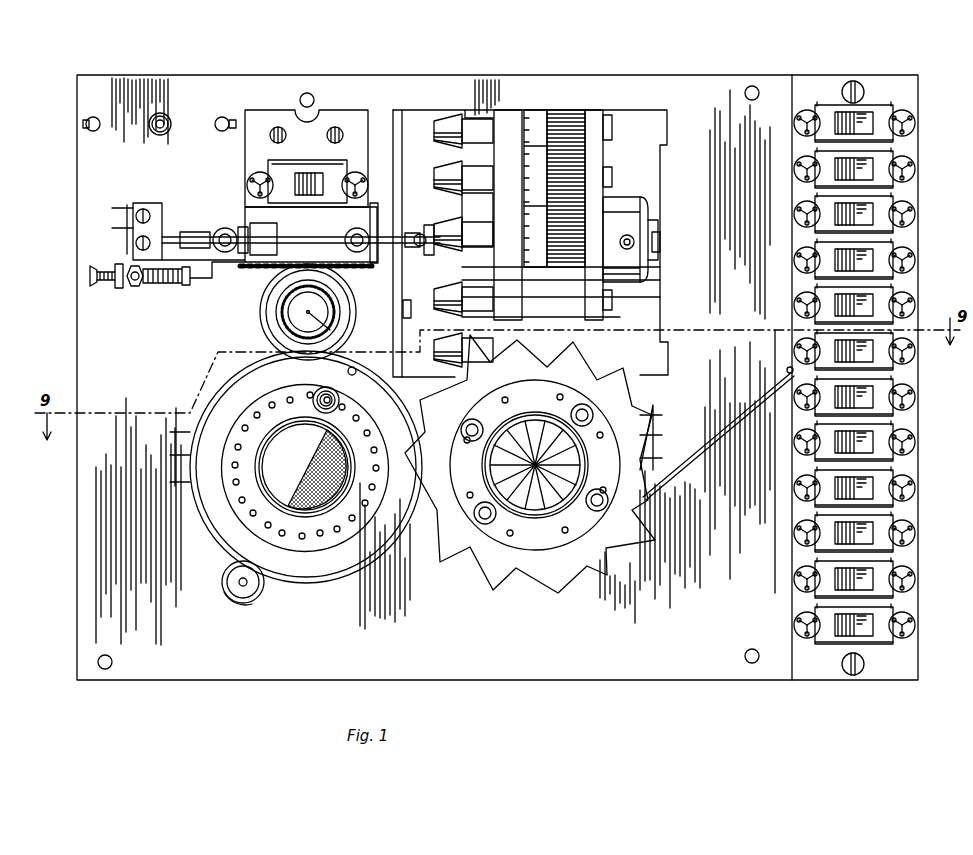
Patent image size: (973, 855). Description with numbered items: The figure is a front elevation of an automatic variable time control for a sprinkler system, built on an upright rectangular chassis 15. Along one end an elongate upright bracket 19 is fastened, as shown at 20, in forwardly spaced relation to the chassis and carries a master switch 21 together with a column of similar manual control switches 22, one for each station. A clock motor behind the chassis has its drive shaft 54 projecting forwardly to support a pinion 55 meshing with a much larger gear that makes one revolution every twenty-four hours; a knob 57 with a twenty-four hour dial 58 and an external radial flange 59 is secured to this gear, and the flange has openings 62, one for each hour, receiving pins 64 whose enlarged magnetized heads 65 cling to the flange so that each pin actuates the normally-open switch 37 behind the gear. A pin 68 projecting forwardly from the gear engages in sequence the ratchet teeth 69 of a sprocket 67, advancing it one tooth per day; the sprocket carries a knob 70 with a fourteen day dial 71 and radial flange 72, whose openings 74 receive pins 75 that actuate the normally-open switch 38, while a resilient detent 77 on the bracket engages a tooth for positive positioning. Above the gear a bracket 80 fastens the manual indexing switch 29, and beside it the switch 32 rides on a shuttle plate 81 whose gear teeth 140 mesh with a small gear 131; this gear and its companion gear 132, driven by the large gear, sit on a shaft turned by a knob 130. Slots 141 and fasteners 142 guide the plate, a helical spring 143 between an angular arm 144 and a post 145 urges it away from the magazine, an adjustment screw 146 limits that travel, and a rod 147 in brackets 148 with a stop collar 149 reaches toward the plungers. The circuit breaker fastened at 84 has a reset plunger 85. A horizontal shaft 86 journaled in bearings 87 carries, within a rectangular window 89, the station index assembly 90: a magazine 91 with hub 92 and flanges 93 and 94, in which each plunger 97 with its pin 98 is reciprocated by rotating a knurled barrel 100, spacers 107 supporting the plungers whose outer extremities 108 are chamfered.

The chassis 15 is at (77, 150).
The bracket 19 is at (868, 377).
The fastening 20 is at (850, 82).
The master switch 21 is at (880, 650).
The manual control switches 22 is at (905, 445).
The manual indexing switch 29 is at (310, 160).
The normally-open switch 32 is at (112, 228).
The normally-open switch 37 is at (170, 432).
The normally-open switch 38 is at (655, 408).
The drive shaft 54 is at (240, 582).
The pinion 55 is at (244, 603).
The knob 57 is at (350, 490).
The twenty-four hour dial 58 is at (262, 437).
The radial flange 59 is at (355, 526).
The openings 62 is at (300, 537).
The pins 64 is at (318, 393).
The enlarged head 65 is at (340, 400).
The pins 68 is at (348, 371).
The sprocket 67 is at (450, 545).
The ratchet teeth 69 is at (548, 582).
The knob 70 is at (536, 418).
The fourteen day dial 71 is at (583, 457).
The radial flange 72 is at (451, 456).
The openings 74 is at (572, 522).
The pins 75 is at (480, 525).
The resilient detent 77 is at (705, 447).
The bracket 80 is at (358, 110).
The shuttle plate 81 is at (160, 203).
The fastening 84 is at (223, 117).
The plunger 85 is at (168, 114).
The horizontal shaft 86 is at (422, 250).
The bearings 87 is at (660, 242).
The window 89 is at (662, 160).
The station index assembly 90 is at (612, 120).
The magazine 91 is at (608, 164).
The hub 92 is at (652, 275).
The radial flange 93 is at (592, 112).
The radial flange 94 is at (503, 125).
The plunger 97 is at (470, 228).
The pin 98 is at (612, 300).
The barrel 100 is at (558, 112).
The spacers 107 is at (470, 110).
The outer extremities 108 is at (445, 112).
The knob 130 is at (330, 330).
The gear 131 is at (282, 300).
The gear 132 is at (276, 318).
The gear teeth 140 is at (260, 266).
The longitudinal slots 141 is at (352, 229).
The fasteners 142 is at (218, 230).
The helical spring 143 is at (162, 286).
The angular arm 144 is at (212, 282).
The post 145 is at (118, 290).
The adjustment screw 146 is at (90, 276).
The rod 147 is at (382, 248).
The brackets 148 is at (262, 224).
The stop collar 149 is at (243, 227).